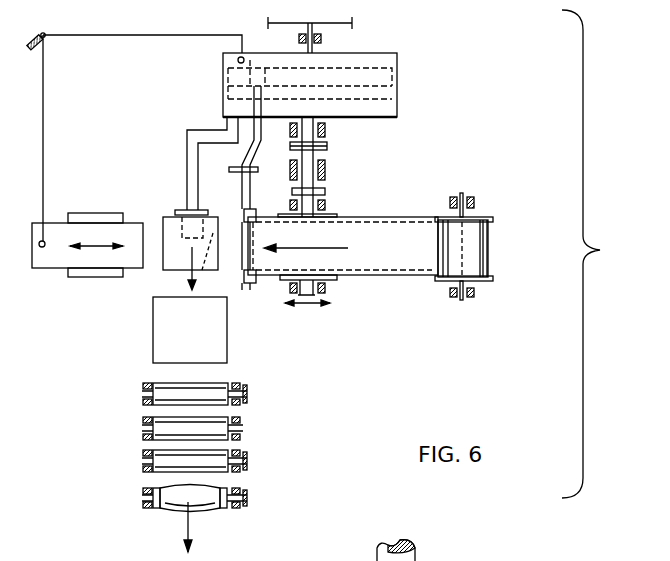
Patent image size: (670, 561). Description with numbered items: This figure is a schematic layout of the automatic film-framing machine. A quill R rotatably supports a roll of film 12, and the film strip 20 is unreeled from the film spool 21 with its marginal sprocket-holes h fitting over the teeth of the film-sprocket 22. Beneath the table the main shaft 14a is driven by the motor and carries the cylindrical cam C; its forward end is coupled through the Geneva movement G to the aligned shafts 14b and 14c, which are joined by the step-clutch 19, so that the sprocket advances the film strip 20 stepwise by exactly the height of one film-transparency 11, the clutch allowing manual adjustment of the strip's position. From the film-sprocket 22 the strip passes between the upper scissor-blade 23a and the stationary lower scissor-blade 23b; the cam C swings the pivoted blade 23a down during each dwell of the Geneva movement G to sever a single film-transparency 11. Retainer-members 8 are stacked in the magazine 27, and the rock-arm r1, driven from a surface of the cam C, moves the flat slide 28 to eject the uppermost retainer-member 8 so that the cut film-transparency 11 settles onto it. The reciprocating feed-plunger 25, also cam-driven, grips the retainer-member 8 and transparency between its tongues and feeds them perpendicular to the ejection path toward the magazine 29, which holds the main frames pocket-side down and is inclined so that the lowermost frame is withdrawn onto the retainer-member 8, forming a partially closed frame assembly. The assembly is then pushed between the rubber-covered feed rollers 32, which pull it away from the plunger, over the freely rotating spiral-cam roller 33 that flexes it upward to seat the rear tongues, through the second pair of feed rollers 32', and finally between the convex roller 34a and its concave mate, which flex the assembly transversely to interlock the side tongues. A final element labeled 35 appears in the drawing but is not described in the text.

The cylindrical cam C is at (382, 70).
The rock-arm r1 is at (43, 138).
The feed-plunger 25 is at (181, 210).
The film-transparency 11 is at (172, 268).
The magazine 29 is at (163, 323).
The slide 28 is at (57, 227).
The magazine 27 is at (102, 217).
The retainer-member 8 is at (83, 273).
The upper scissor-blade 23a is at (240, 203).
The lower scissor-blade 23b is at (250, 285).
The film strip 20 is at (373, 223).
The main shaft 14a is at (310, 140).
The Geneva movement G is at (327, 147).
The shaft 14b is at (310, 160).
The step-clutch 19 is at (322, 192).
The shaft 14c is at (312, 295).
The sprocket-holes h is at (402, 276).
The film-sprocket 22 is at (280, 280).
The quill R is at (463, 193).
The roll of film 12 is at (488, 260).
The film spool 21 is at (486, 279).
The feed rollers 32 is at (173, 384).
The roller 33 is at (168, 423).
The second pair of feed rollers 32' is at (173, 458).
The feed roller 34a is at (177, 493).
The web 35 is at (325, 559).